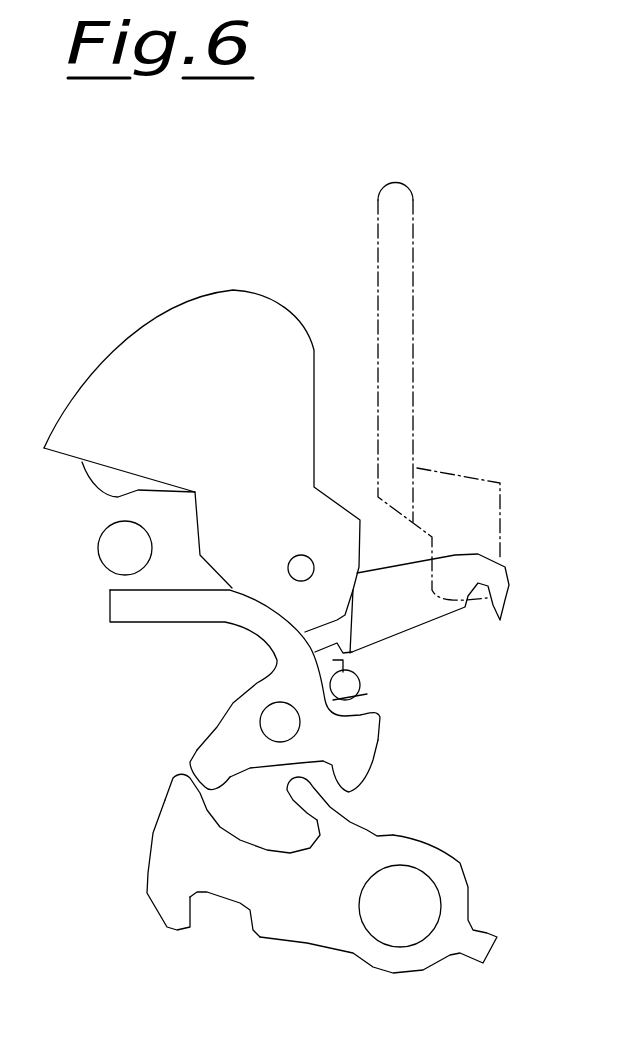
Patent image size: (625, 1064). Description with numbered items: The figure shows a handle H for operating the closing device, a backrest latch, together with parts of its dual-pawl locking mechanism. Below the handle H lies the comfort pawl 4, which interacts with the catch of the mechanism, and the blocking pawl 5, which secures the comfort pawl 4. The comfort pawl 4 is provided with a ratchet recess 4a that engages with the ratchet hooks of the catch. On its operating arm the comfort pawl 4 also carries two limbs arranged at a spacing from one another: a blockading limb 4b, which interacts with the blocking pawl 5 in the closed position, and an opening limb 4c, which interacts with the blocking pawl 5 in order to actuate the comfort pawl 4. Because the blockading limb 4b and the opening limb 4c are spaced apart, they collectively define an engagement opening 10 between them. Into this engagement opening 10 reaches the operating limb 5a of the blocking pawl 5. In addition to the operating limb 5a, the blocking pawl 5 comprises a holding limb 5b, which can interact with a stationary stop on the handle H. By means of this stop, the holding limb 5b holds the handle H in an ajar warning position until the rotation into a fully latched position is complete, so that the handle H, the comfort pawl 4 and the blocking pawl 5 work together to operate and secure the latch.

The handle H is at (183, 306).
The comfort pawl 4 is at (460, 877).
The ratchet recess 4a is at (210, 905).
The blockading limb 4b is at (185, 800).
The opening limb 4c is at (303, 790).
The blocking pawl 5 is at (207, 707).
The operating limb 5a is at (197, 752).
The holding limb 5b is at (352, 779).
The engagement opening 10 is at (297, 837).